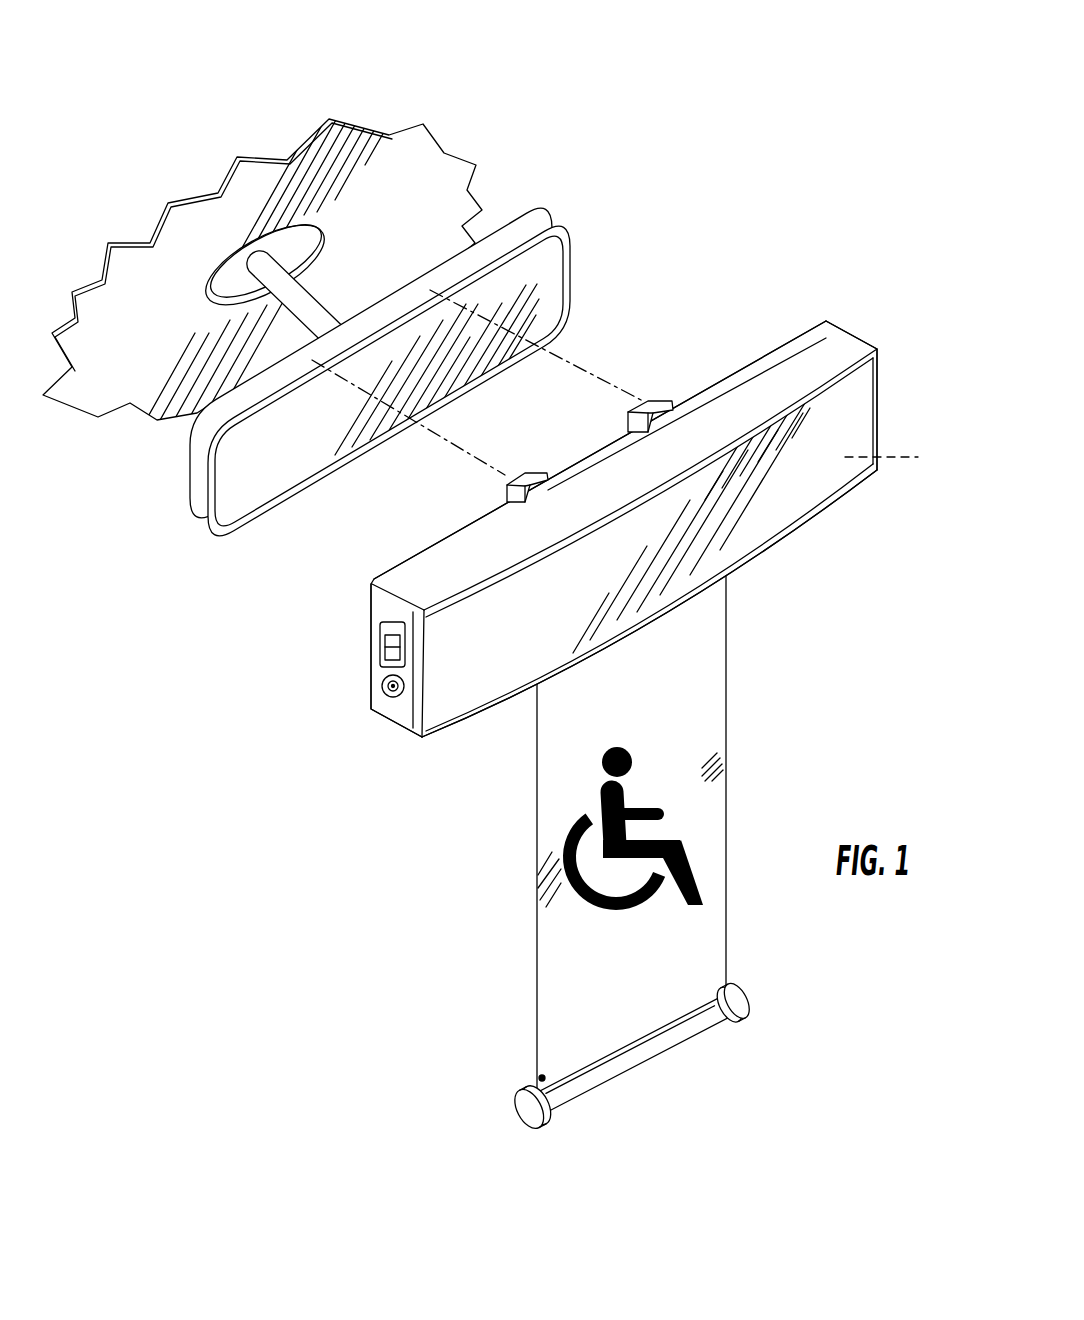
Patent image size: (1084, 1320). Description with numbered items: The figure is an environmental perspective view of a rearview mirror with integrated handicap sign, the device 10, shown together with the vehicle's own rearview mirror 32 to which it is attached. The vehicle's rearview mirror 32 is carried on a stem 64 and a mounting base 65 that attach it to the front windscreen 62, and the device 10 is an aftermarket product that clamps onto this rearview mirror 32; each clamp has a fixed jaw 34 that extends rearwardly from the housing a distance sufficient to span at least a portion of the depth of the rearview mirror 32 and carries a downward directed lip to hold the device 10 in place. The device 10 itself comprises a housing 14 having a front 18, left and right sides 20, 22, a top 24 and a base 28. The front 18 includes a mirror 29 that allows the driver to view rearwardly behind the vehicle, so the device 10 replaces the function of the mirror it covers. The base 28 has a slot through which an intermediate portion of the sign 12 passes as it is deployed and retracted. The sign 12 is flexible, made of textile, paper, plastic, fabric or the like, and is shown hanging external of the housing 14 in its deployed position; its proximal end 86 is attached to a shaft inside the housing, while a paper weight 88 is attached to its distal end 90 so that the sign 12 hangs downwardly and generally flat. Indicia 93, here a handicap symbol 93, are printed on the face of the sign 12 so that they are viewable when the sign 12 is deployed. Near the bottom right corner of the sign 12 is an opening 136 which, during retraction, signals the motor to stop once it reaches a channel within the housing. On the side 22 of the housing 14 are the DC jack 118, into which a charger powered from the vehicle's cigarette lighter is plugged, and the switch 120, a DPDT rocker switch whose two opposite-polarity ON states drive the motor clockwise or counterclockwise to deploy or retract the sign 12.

The rearview mirror with integrated handicap sign 10 is at (322, 985).
The sign 12 is at (536, 823).
The housing 14 is at (543, 529).
The front 18 is at (900, 460).
The left side 20 is at (880, 412).
The right side 22 is at (273, 715).
The top 24 is at (750, 400).
The base 28 is at (472, 717).
The mirror 29 is at (682, 544).
The rearview mirror 32 is at (556, 232).
The fixed jaw 34 is at (648, 402).
The front windscreen 62 is at (323, 305).
The stem 64 is at (430, 165).
The mounting base 65 is at (240, 237).
The proximal end 86 is at (679, 615).
The paper weight 88 is at (530, 1133).
The distal end 90 is at (610, 1118).
The indicia 93 is at (591, 907).
The DC jack 118 is at (387, 692).
The switch 120 is at (387, 648).
The opening 136 is at (537, 1083).